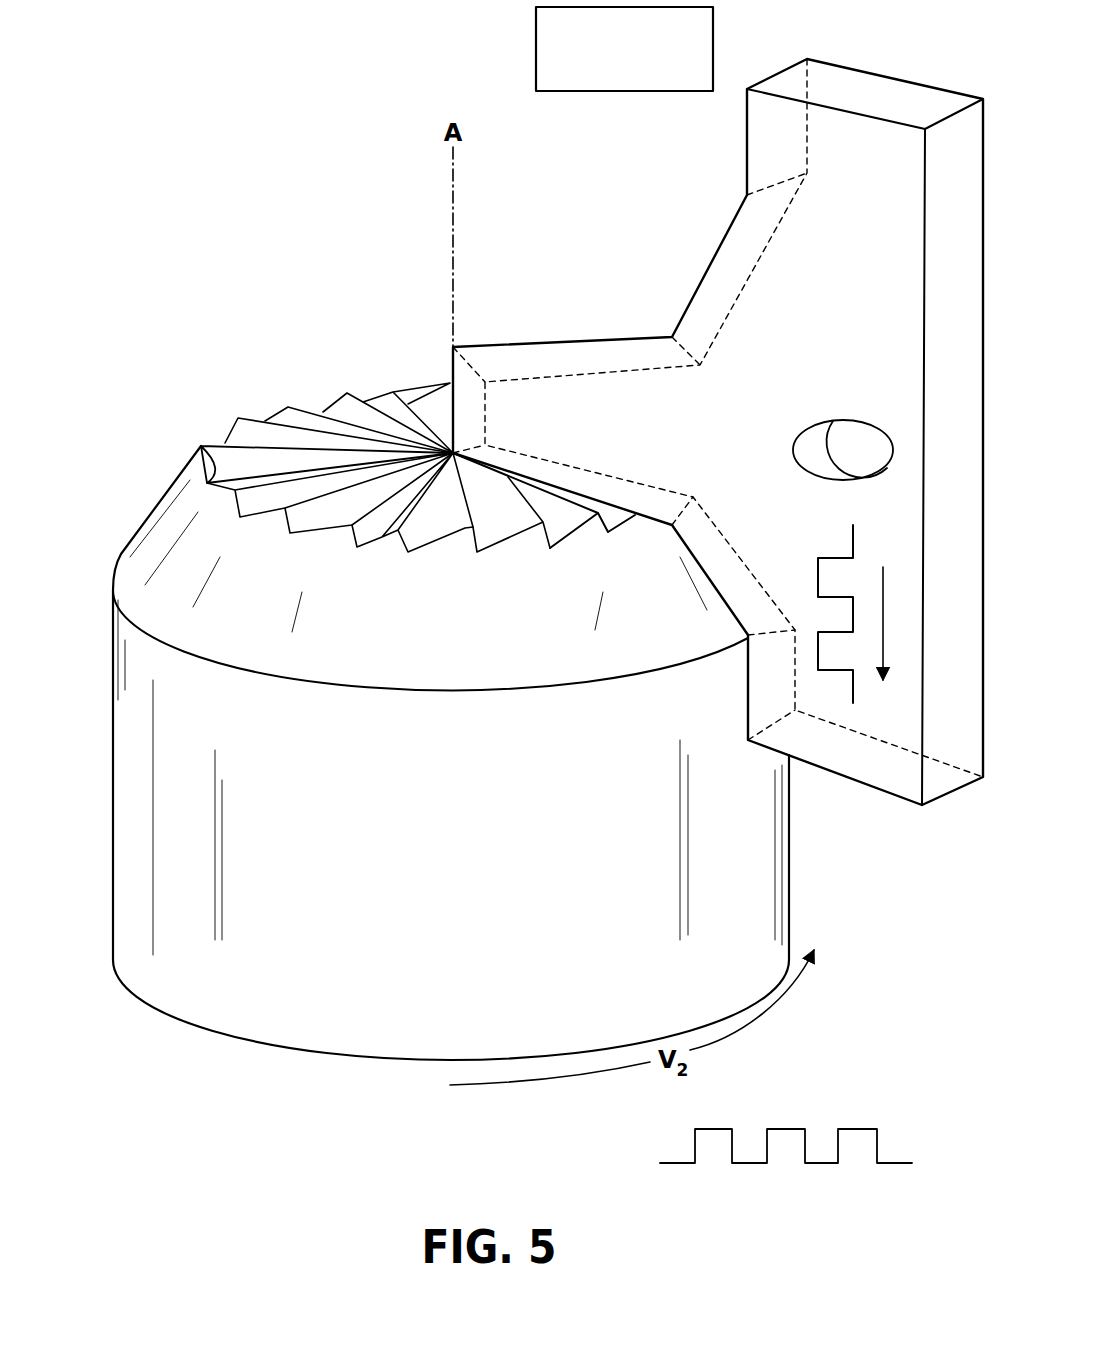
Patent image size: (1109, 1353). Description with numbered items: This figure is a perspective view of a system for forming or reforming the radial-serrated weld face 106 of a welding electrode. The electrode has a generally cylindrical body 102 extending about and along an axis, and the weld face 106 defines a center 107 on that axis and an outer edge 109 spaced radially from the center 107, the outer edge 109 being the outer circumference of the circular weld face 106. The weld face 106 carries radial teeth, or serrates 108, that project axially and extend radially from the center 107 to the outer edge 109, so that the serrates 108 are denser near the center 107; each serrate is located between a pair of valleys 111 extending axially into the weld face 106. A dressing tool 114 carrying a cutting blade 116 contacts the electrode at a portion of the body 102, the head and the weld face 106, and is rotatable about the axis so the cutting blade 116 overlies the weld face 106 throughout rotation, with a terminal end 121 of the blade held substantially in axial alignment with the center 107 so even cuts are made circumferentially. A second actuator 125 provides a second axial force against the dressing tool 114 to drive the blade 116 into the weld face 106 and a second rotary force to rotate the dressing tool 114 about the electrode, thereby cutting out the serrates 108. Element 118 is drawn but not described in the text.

The body 102 is at (173, 983).
The weld face 106 is at (332, 428).
The center 107 is at (396, 425).
The serrates 108 is at (285, 407).
The outer edge 109 is at (213, 447).
The valleys 111 is at (357, 545).
The dressing tool 114 is at (757, 300).
The cutting blade 116 is at (508, 482).
The blade edge 118 is at (594, 470).
The terminal end 121 is at (467, 447).
The second actuator 125 is at (606, 60).